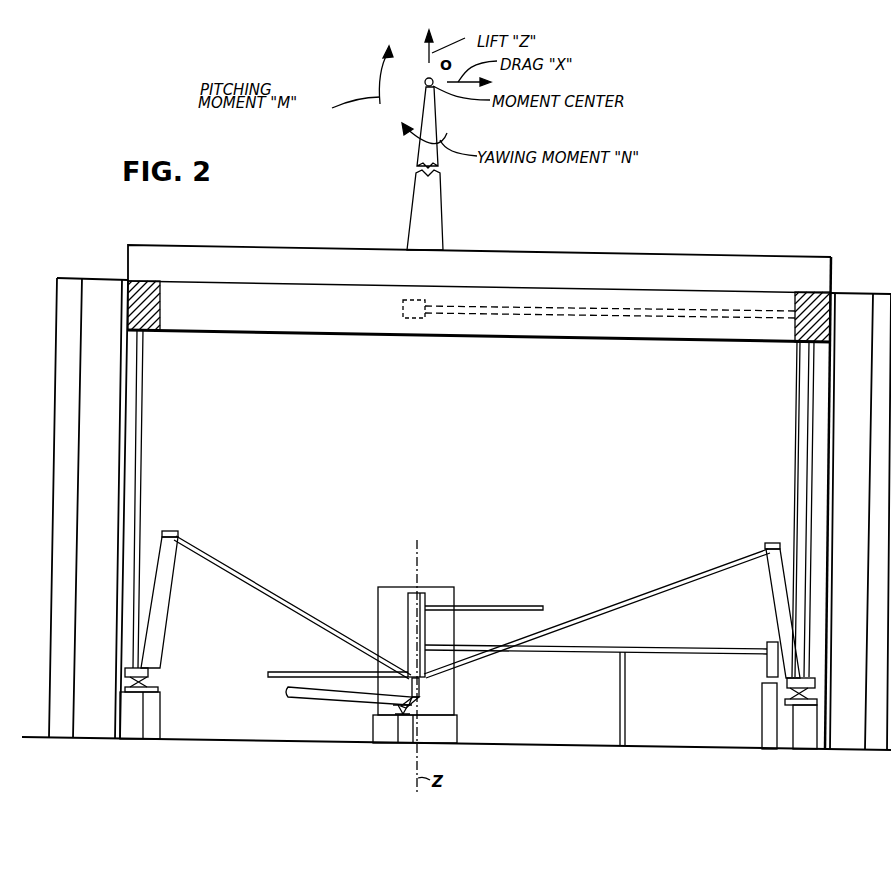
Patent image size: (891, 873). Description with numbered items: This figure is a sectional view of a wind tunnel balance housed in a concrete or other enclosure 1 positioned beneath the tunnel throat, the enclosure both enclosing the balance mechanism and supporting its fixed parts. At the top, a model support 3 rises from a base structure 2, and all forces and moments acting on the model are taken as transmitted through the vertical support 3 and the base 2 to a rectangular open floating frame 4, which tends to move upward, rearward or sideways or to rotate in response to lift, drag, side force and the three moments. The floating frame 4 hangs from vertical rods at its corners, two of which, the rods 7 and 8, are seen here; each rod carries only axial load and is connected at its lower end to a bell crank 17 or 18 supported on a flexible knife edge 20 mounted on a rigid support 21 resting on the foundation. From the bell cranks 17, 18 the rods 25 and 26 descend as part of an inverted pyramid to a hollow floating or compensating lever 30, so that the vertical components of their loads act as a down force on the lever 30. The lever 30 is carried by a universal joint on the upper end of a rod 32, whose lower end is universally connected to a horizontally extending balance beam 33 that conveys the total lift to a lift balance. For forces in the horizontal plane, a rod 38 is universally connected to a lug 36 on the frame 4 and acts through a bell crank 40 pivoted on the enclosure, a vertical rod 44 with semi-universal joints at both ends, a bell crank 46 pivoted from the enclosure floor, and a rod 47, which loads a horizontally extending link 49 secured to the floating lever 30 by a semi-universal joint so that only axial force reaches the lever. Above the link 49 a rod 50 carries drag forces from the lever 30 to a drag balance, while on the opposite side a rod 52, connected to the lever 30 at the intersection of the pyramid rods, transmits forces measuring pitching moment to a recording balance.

The enclosure 1 is at (50, 618).
The base structure 2 is at (274, 256).
The model support 3 is at (436, 226).
The floating frame 4 is at (286, 331).
The vertical rod 7 is at (146, 426).
The vertical rod 8 is at (816, 446).
The bell crank 17 is at (165, 629).
The bell crank 18 is at (773, 590).
The knife edge 20 is at (148, 683).
The rigid support 21 is at (157, 716).
The rod 25 is at (290, 606).
The rod 26 is at (715, 572).
The floating lever 30 is at (409, 612).
The rod 32 is at (421, 684).
The balance beam 33 is at (332, 695).
The lug 36 is at (404, 316).
The rod 38 is at (628, 310).
The bell crank 40 is at (804, 293).
The vertical rod 44 is at (797, 392).
The bell crank 46 is at (766, 664).
The rod 47 is at (628, 650).
The link 49 is at (562, 648).
The rod 50 is at (522, 608).
The rod 52 is at (327, 652).